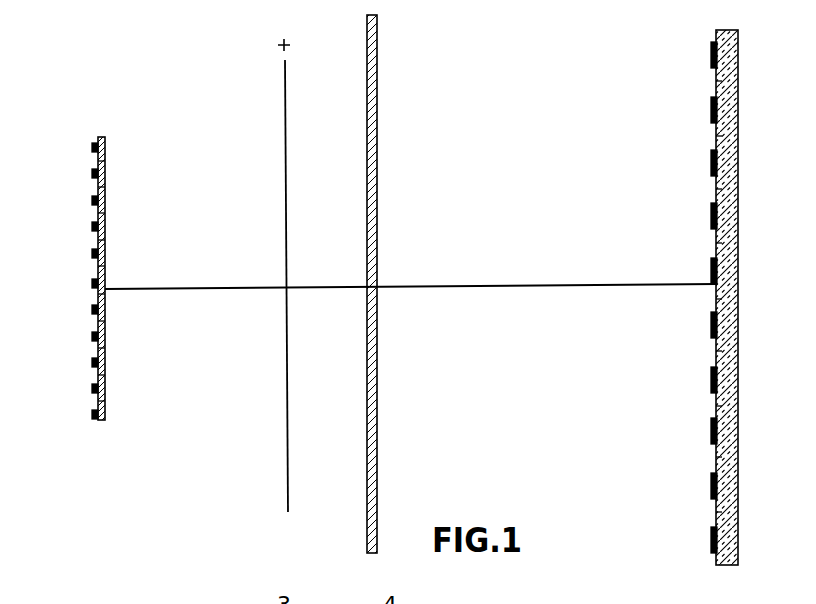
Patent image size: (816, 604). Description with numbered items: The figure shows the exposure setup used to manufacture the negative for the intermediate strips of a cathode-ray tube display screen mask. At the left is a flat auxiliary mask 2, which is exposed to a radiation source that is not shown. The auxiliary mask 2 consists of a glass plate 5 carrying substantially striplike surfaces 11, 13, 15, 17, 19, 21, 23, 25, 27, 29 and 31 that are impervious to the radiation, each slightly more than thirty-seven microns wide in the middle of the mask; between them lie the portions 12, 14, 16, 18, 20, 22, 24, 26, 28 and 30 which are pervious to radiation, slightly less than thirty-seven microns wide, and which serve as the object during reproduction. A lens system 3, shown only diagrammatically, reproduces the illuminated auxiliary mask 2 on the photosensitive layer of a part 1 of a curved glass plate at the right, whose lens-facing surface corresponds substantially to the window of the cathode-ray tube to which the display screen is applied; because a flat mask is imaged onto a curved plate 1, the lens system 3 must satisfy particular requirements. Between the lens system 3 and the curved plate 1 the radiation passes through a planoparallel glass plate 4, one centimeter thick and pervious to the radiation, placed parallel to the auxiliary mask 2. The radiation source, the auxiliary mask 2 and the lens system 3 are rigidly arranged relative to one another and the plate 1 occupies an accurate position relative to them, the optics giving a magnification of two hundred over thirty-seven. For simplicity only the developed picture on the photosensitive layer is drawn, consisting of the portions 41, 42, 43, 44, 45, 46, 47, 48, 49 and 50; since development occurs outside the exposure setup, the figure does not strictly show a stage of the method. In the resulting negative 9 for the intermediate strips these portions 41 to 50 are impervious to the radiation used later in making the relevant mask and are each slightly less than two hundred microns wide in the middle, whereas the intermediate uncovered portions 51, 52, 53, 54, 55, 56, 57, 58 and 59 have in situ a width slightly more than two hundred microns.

The part of curved glass plate 1 is at (732, 205).
The flat auxiliary mask 2 is at (96, 424).
The lens system 3 is at (284, 263).
The planoparallel glass plate 4 is at (377, 35).
The glass plate 5 is at (104, 138).
The negative for the intermediate strips 9 is at (722, 569).
The striplike surface 11 is at (92, 147).
The portion pervious to radiation 12 is at (98, 161).
The striplike surface 13 is at (92, 174).
The portion pervious to radiation 14 is at (98, 187).
The striplike surface 15 is at (92, 200).
The portion pervious to radiation 16 is at (98, 213).
The striplike surface 17 is at (92, 227).
The portion pervious to radiation 18 is at (98, 240).
The striplike surface 19 is at (92, 253).
The portion pervious to radiation 20 is at (98, 266).
The striplike surface 21 is at (92, 283).
The portion pervious to radiation 22 is at (98, 294).
The striplike surface 23 is at (92, 309).
The portion pervious to radiation 24 is at (98, 321).
The striplike surface 25 is at (92, 336).
The portion pervious to radiation 26 is at (98, 348).
The striplike surface 27 is at (92, 363).
The portion pervious to radiation 28 is at (98, 375).
The striplike surface 29 is at (92, 389).
The portion pervious to radiation 30 is at (98, 401).
The striplike surface 31 is at (92, 414).
The portion of the photosensitive layer 41 is at (711, 53).
The portion of the photosensitive layer 42 is at (711, 108).
The portion of the photosensitive layer 43 is at (711, 162).
The portion of the photosensitive layer 44 is at (711, 214).
The portion of the photosensitive layer 45 is at (711, 269).
The portion of the photosensitive layer 46 is at (711, 323).
The portion of the photosensitive layer 47 is at (711, 379).
The portion of the photosensitive layer 48 is at (711, 431).
The portion of the photosensitive layer 49 is at (711, 486).
The portion of the photosensitive layer 50 is at (711, 536).
The intermediate uncovered portion 51 is at (716, 81).
The intermediate uncovered portion 52 is at (716, 136).
The intermediate uncovered portion 53 is at (716, 189).
The intermediate uncovered portion 54 is at (716, 243).
The intermediate uncovered portion 55 is at (716, 299).
The intermediate uncovered portion 56 is at (716, 351).
The intermediate uncovered portion 57 is at (716, 406).
The intermediate uncovered portion 58 is at (716, 457).
The intermediate uncovered portion 59 is at (716, 512).